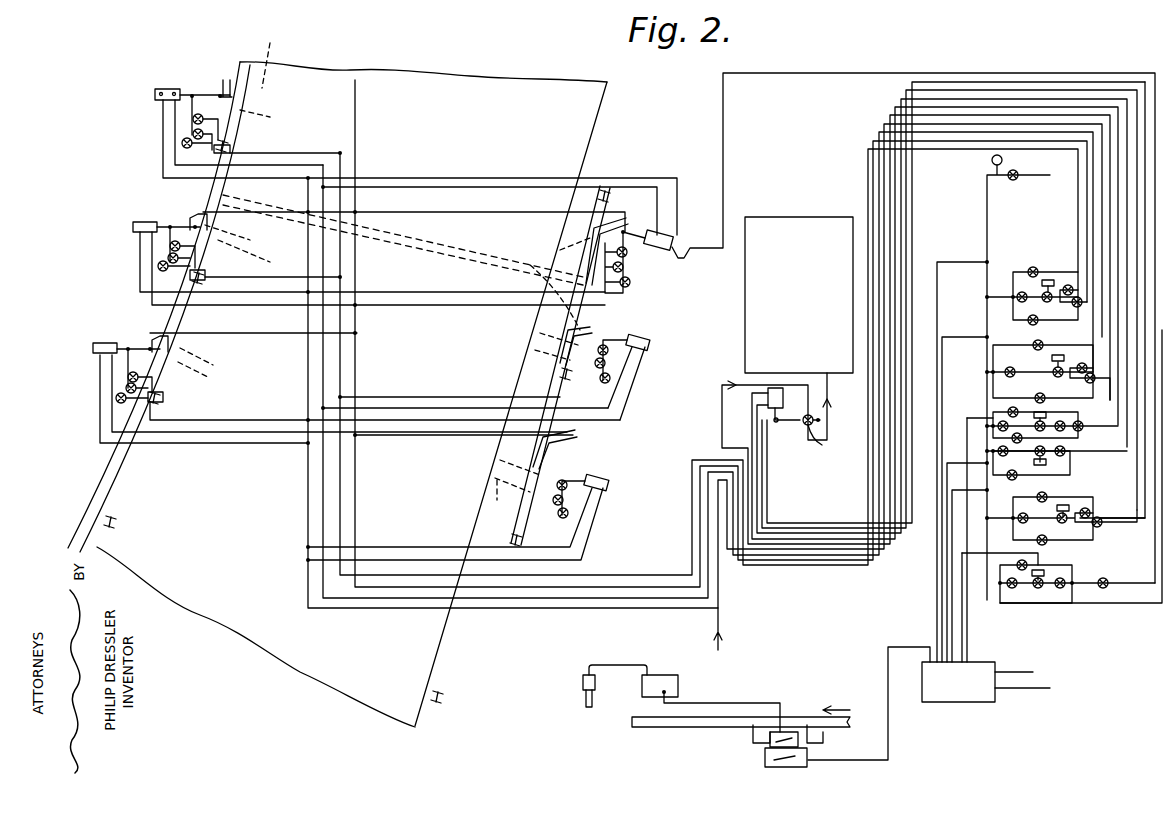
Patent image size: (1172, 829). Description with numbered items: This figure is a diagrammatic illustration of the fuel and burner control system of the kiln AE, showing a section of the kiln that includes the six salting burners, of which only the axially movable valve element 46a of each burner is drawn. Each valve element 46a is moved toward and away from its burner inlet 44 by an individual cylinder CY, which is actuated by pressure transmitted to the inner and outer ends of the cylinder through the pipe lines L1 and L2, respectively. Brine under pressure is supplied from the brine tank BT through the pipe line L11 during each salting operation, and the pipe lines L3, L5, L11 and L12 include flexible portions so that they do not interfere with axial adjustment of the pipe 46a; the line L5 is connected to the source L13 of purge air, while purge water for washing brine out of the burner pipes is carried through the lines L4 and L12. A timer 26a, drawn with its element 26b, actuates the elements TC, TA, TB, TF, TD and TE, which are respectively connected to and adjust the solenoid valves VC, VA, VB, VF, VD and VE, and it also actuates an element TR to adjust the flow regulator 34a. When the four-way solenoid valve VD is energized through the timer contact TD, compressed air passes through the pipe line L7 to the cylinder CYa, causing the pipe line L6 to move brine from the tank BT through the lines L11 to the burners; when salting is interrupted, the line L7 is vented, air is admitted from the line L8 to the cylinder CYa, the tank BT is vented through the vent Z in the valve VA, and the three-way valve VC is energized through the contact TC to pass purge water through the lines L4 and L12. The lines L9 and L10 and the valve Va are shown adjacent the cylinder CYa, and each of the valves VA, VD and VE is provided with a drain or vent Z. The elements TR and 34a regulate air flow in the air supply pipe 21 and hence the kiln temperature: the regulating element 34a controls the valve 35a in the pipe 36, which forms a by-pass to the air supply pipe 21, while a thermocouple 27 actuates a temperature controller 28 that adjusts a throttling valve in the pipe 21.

The burner inlet 44 is at (384, 259).
The valve element 46a is at (224, 80).
The cylinder CY is at (162, 88).
The pipe line L1 is at (288, 178).
The pipe line L2 is at (580, 620).
The pipe line L3 is at (305, 78).
The pipe line L4 is at (718, 617).
The pipe line L5 is at (270, 153).
The pipe line L6 is at (722, 433).
The pipe line L7 is at (752, 412).
The line L8 is at (757, 477).
The line L9 is at (762, 440).
The line L10 is at (767, 458).
The pipe line L11 is at (400, 236).
The pipe line L12 is at (400, 252).
The source of purge air L13 is at (985, 195).
The kiln AE is at (430, 645).
The brine tank BT is at (812, 302).
The cylinder CYa is at (783, 398).
The valve Va is at (818, 420).
The vent Z is at (1045, 298).
The solenoid valve VA is at (1058, 522).
The solenoid valve VB is at (1045, 458).
The three-way solenoid valve VC is at (1038, 590).
The four-way solenoid valve VD is at (1045, 358).
The solenoid valve VE is at (1036, 298).
The solenoid valve VF is at (993, 426).
The timer element TE is at (953, 282).
The timer contact TD is at (958, 380).
The timer element TB is at (947, 480).
The timer element TA is at (952, 535).
The timer contact TC is at (962, 628).
The timer element TF is at (967, 648).
The timer element TR is at (910, 647).
The timer 26a is at (945, 695).
The timer leads 26b is at (1033, 672).
The thermocouple 27 is at (589, 700).
The temperature controller 28 is at (678, 680).
The air supply pipe 21 is at (678, 732).
The by-pass pipe 36 is at (753, 735).
The valve 35a is at (792, 740).
The flow regulator 34a is at (765, 760).